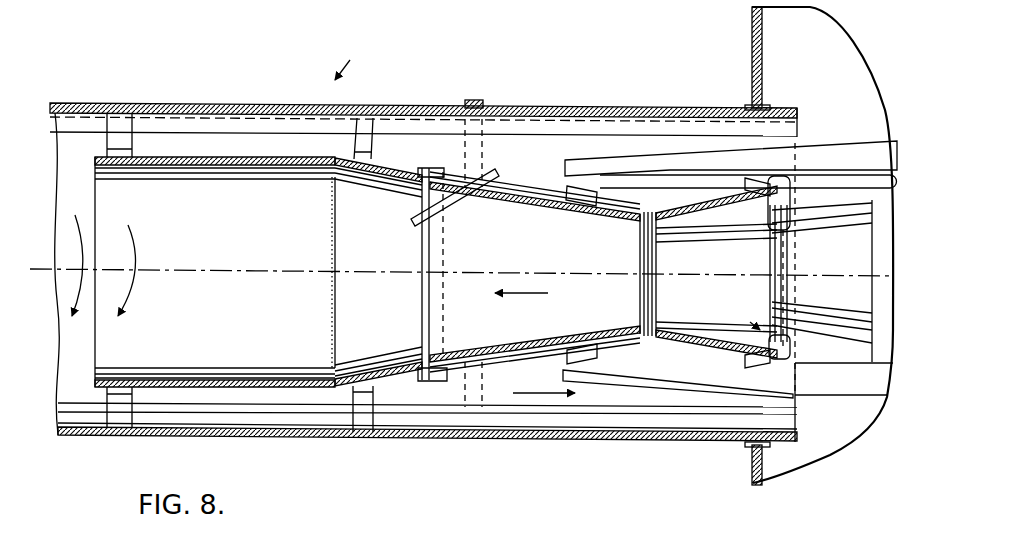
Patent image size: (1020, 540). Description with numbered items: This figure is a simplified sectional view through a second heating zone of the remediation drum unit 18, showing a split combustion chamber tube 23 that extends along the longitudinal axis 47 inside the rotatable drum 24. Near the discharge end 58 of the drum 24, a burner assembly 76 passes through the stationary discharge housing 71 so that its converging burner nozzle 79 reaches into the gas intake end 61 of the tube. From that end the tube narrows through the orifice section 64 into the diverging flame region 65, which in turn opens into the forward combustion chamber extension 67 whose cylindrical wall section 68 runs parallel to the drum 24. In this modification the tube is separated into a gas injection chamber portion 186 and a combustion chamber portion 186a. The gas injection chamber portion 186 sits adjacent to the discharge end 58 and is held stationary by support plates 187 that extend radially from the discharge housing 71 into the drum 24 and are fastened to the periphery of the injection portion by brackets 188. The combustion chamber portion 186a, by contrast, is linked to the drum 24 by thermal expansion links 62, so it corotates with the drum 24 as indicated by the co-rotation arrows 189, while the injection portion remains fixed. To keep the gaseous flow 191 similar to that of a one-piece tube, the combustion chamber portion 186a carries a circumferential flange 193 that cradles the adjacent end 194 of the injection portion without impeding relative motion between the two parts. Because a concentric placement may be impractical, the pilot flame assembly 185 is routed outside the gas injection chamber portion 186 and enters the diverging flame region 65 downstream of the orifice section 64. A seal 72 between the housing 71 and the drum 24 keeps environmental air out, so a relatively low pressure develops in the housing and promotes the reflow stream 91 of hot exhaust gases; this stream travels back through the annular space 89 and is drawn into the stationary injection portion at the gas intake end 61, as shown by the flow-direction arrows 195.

The remediation drum unit 18 is at (351, 64).
The combustion chamber tube 23 is at (411, 150).
The drum 24 is at (242, 104).
The longitudinal axis 47 is at (193, 270).
The discharge end 58 is at (800, 397).
The gas intake end 61 is at (787, 293).
The thermal expansion links 62 is at (122, 130).
The orifice section 64 is at (638, 229).
The diverging flame region 65 is at (400, 184).
The forward combustion chamber extension 67 is at (236, 218).
The cylindrical wall section 68 is at (279, 168).
The discharge housing 71 is at (752, 22).
The seal 72 is at (750, 106).
The burner assembly 76 is at (882, 200).
The converging burner nozzle 79 is at (816, 203).
The annular space 89 is at (424, 428).
The reflow stream 91 is at (543, 392).
The pilot flame assembly 185 is at (504, 174).
The gas injection chamber portion 186 is at (543, 196).
The combustion chamber portion 186a is at (185, 157).
The support plates 187 is at (627, 156).
The brackets 188 is at (588, 187).
The co-rotation arrows 189 is at (78, 226).
The gaseous flow 191 is at (530, 293).
The circumferential flange 193 is at (438, 168).
The adjacent end 194 is at (426, 303).
The flow-direction arrows 195 is at (762, 165).